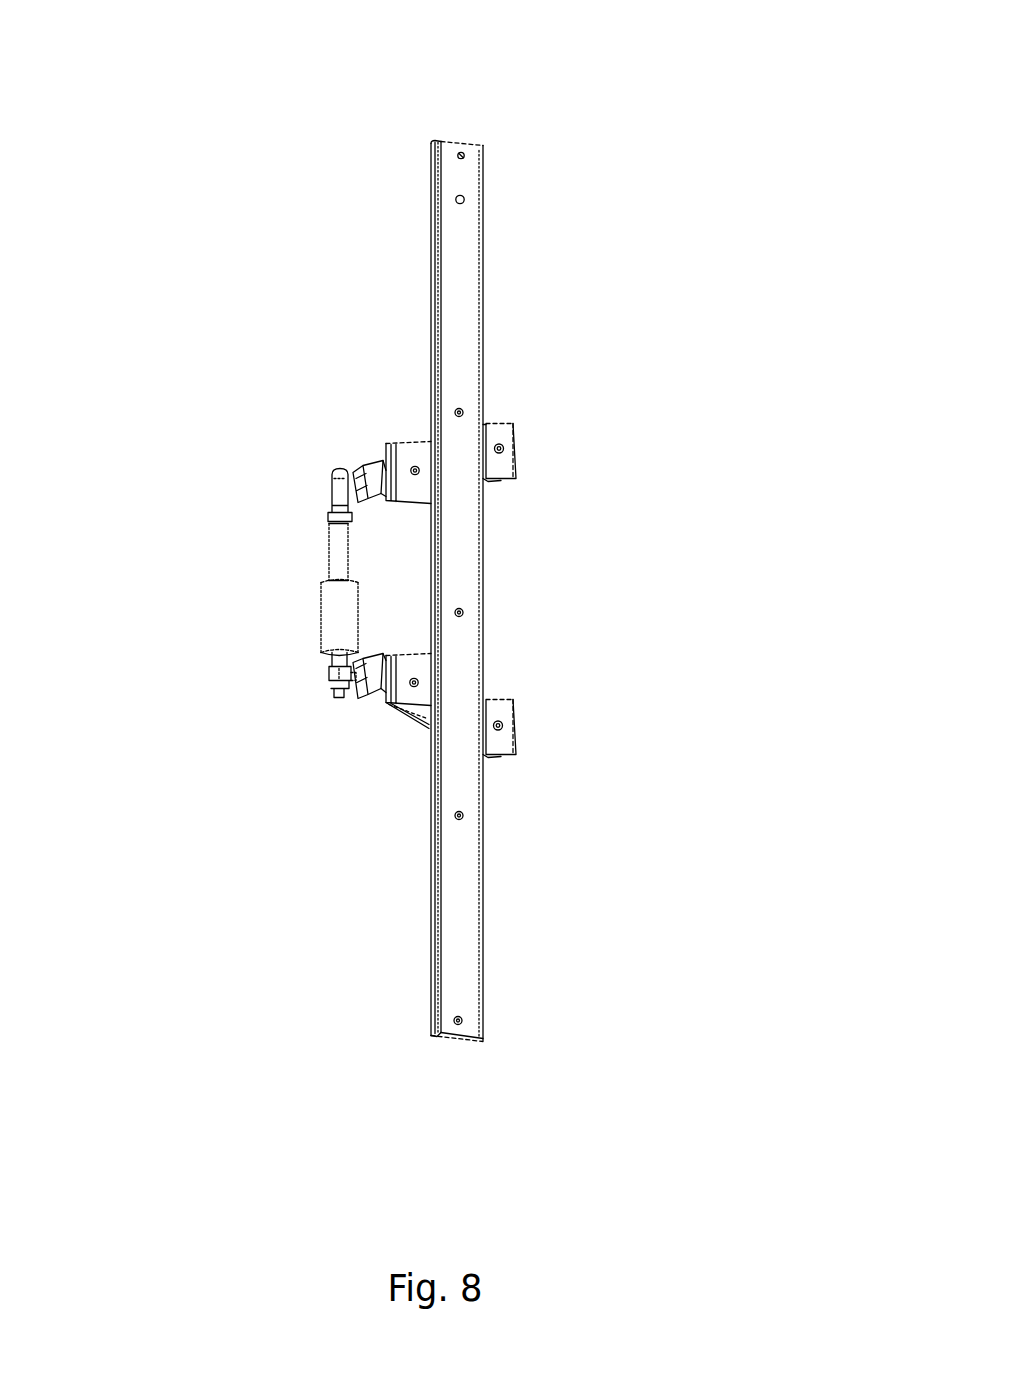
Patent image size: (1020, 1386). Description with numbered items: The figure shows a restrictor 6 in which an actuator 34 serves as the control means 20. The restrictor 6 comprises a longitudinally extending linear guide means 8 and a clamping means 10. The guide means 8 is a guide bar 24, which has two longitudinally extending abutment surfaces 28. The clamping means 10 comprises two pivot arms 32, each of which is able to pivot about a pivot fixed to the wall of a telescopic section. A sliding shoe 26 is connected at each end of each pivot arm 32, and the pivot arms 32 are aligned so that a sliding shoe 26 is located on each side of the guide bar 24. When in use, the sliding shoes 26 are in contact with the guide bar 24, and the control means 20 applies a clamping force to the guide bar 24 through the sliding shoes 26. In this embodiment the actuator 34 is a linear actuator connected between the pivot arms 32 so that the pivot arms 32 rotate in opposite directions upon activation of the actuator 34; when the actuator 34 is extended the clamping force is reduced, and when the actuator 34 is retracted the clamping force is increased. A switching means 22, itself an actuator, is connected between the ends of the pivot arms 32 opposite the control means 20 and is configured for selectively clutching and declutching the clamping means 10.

The restrictor 6 is at (244, 217).
The linear guide means 8 is at (495, 98).
The clamping means 10 is at (262, 490).
The control means 20 is at (336, 590).
The switching means 22 is at (334, 655).
The guide bar 24 is at (468, 282).
The sliding shoe 26 is at (412, 455).
The abutment surfaces 28 is at (428, 183).
The pivot arm 32 is at (365, 472).
The actuator 34 is at (340, 553).